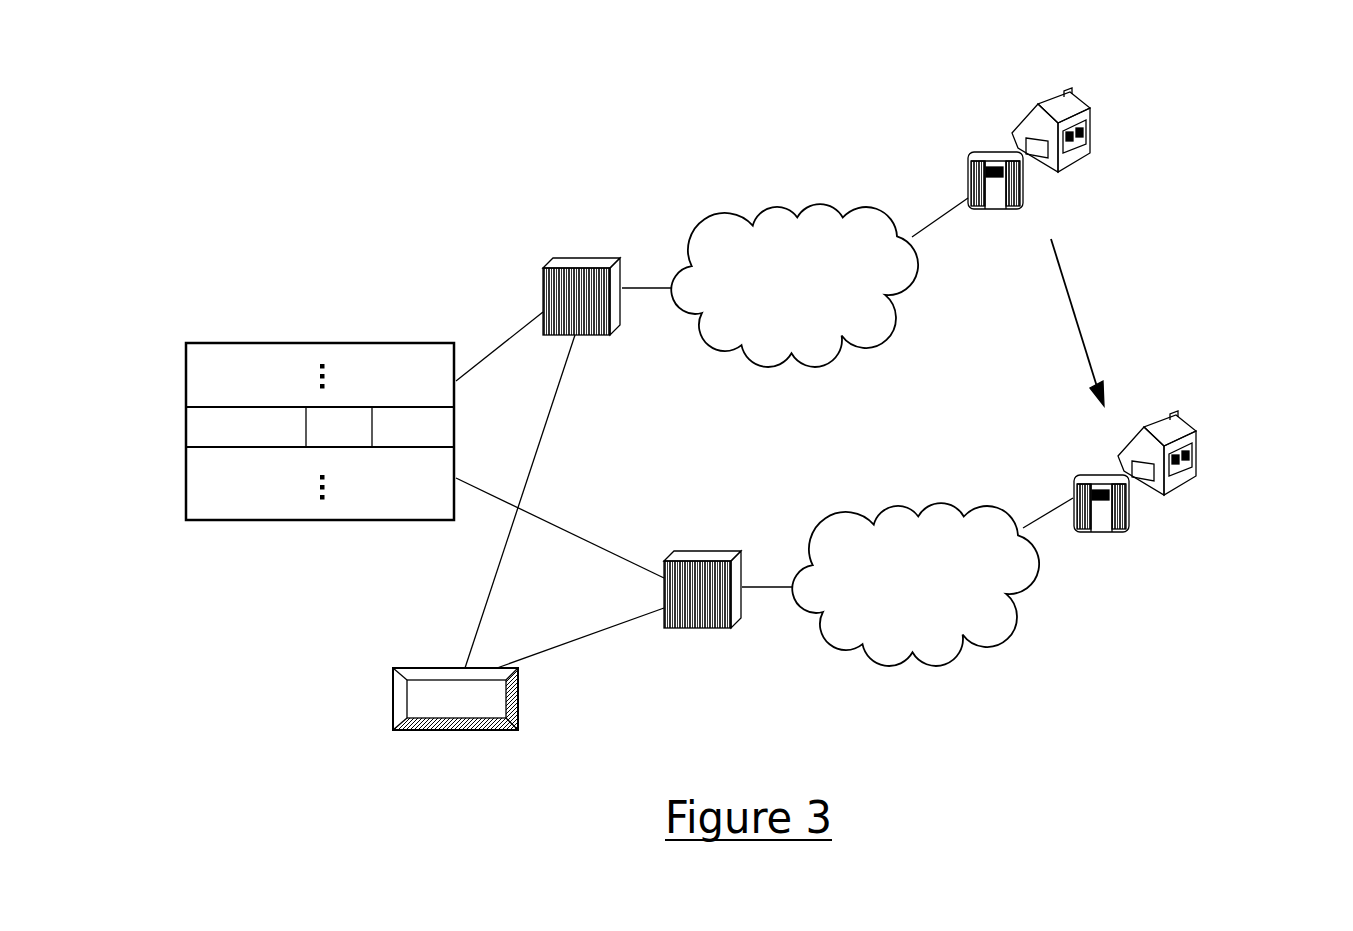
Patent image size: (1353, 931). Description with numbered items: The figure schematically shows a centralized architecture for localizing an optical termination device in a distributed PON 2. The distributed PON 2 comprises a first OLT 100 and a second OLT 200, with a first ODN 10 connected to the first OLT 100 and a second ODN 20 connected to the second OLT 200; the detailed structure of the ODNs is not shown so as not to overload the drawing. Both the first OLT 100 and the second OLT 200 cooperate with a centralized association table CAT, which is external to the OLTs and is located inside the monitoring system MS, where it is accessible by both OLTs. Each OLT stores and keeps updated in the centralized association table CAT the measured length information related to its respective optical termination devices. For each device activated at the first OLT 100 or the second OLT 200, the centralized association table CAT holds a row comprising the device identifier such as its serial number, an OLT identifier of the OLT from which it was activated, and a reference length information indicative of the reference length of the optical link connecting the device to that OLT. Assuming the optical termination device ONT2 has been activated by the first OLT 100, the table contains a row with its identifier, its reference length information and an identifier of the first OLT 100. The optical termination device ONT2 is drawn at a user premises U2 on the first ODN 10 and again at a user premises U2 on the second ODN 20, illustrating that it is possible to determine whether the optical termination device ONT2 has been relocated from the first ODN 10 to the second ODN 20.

The distributed PON 2 is at (462, 112).
The first ODN 10 is at (700, 209).
The second ODN 20 is at (819, 506).
The first OLT 100 is at (597, 253).
The second OLT 200 is at (717, 543).
The centralized association table CAT is at (315, 324).
The monitoring system MS is at (516, 700).
The optical termination device ONT2 is at (1025, 180).
The user premises U2 is at (1113, 123).